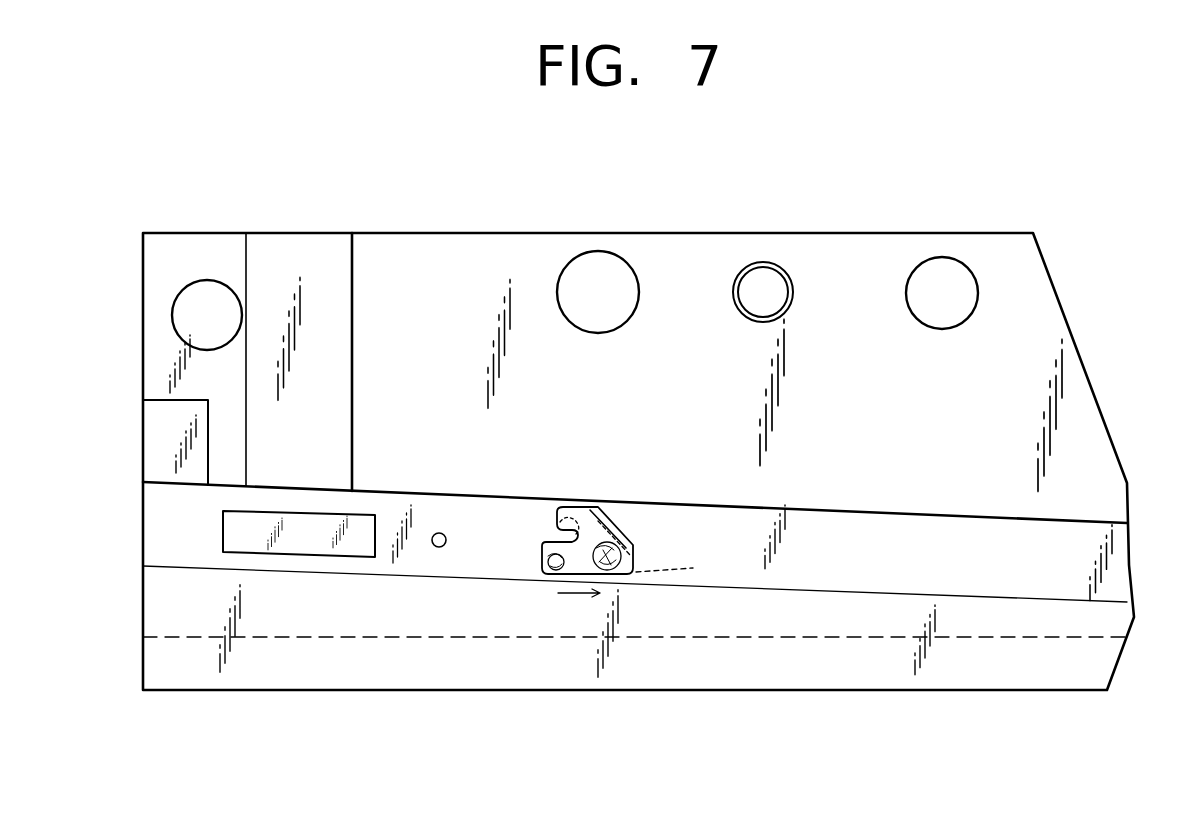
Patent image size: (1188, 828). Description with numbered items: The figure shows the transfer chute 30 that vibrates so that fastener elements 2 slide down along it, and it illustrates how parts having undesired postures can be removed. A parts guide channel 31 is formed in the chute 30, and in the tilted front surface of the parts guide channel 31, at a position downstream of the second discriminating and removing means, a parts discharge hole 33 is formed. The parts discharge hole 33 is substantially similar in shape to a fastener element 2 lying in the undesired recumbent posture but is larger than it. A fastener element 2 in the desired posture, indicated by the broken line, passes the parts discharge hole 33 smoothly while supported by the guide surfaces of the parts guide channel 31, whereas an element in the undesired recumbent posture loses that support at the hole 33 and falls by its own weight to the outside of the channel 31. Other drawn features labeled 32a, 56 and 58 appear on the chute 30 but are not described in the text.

The fastener element 2 is at (571, 518).
The transfer chute 30 is at (777, 697).
The parts guide channel 31 is at (882, 548).
The opening 32a is at (302, 541).
The parts discharge hole 33 is at (630, 532).
The partition plate 56 is at (330, 331).
The pin 58 is at (443, 532).